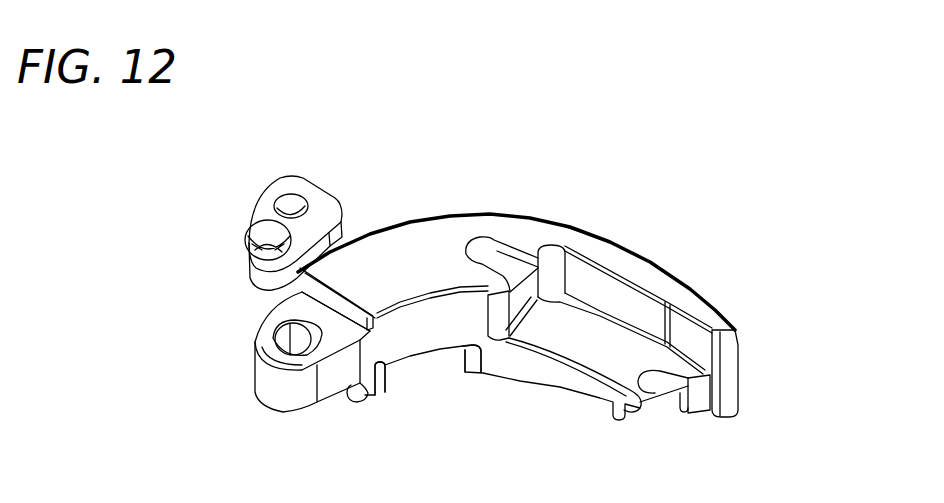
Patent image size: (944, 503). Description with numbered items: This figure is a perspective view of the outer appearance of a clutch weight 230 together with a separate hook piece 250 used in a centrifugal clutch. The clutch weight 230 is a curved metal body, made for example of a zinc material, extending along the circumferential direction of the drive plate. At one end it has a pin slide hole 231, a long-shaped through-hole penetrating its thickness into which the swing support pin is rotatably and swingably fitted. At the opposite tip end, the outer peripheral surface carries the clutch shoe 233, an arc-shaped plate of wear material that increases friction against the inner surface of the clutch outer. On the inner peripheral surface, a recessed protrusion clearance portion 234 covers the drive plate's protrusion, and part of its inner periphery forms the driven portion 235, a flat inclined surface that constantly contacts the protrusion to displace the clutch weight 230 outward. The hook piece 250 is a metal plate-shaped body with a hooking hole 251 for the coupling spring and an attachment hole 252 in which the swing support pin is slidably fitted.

The clutch weight 230 is at (444, 297).
The pin slide hole 231 is at (257, 338).
The clutch shoe 233 is at (630, 248).
The protrusion clearance portion 234 is at (388, 376).
The driven portion 235 is at (465, 350).
The hook piece 250 is at (251, 195).
The hooking hole 251 is at (245, 243).
The attachment hole 252 is at (289, 194).